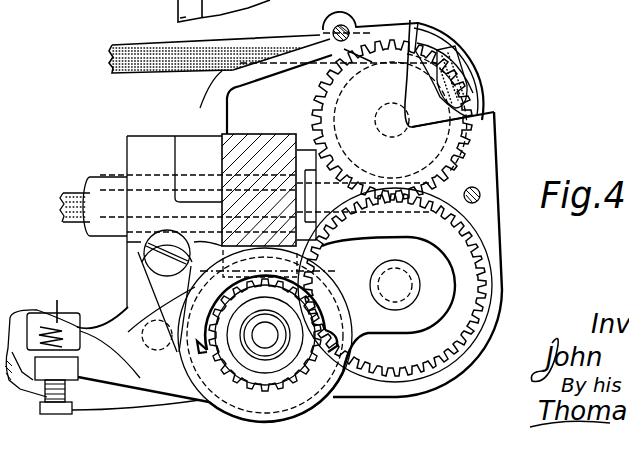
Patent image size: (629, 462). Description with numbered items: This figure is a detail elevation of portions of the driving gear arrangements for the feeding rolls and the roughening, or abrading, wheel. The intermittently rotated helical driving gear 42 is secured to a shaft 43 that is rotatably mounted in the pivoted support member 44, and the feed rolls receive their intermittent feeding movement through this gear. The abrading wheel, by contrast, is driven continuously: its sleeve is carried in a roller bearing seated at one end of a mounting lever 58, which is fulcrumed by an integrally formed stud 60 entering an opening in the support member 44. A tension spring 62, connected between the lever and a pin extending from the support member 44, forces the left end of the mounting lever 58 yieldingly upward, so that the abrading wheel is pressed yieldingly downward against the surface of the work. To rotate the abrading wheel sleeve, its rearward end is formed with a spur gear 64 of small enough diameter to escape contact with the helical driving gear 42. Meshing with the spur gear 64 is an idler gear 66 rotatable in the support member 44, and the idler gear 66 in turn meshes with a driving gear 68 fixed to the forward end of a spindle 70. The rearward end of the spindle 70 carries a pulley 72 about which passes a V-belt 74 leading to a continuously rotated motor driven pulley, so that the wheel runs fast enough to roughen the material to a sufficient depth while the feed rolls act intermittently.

The helical driving gear 42 is at (257, 134).
The shaft 43 is at (112, 177).
The support member 44 is at (500, 179).
The mounting lever 58 is at (172, 399).
The stud 60 is at (135, 315).
The tension spring 62 is at (57, 318).
The spur gear 64 is at (300, 382).
The idler gear 66 is at (490, 275).
The driving gear 68 is at (472, 146).
The spindle 70 is at (414, 119).
The pulley 72 is at (440, 50).
The V-belt 74 is at (146, 42).